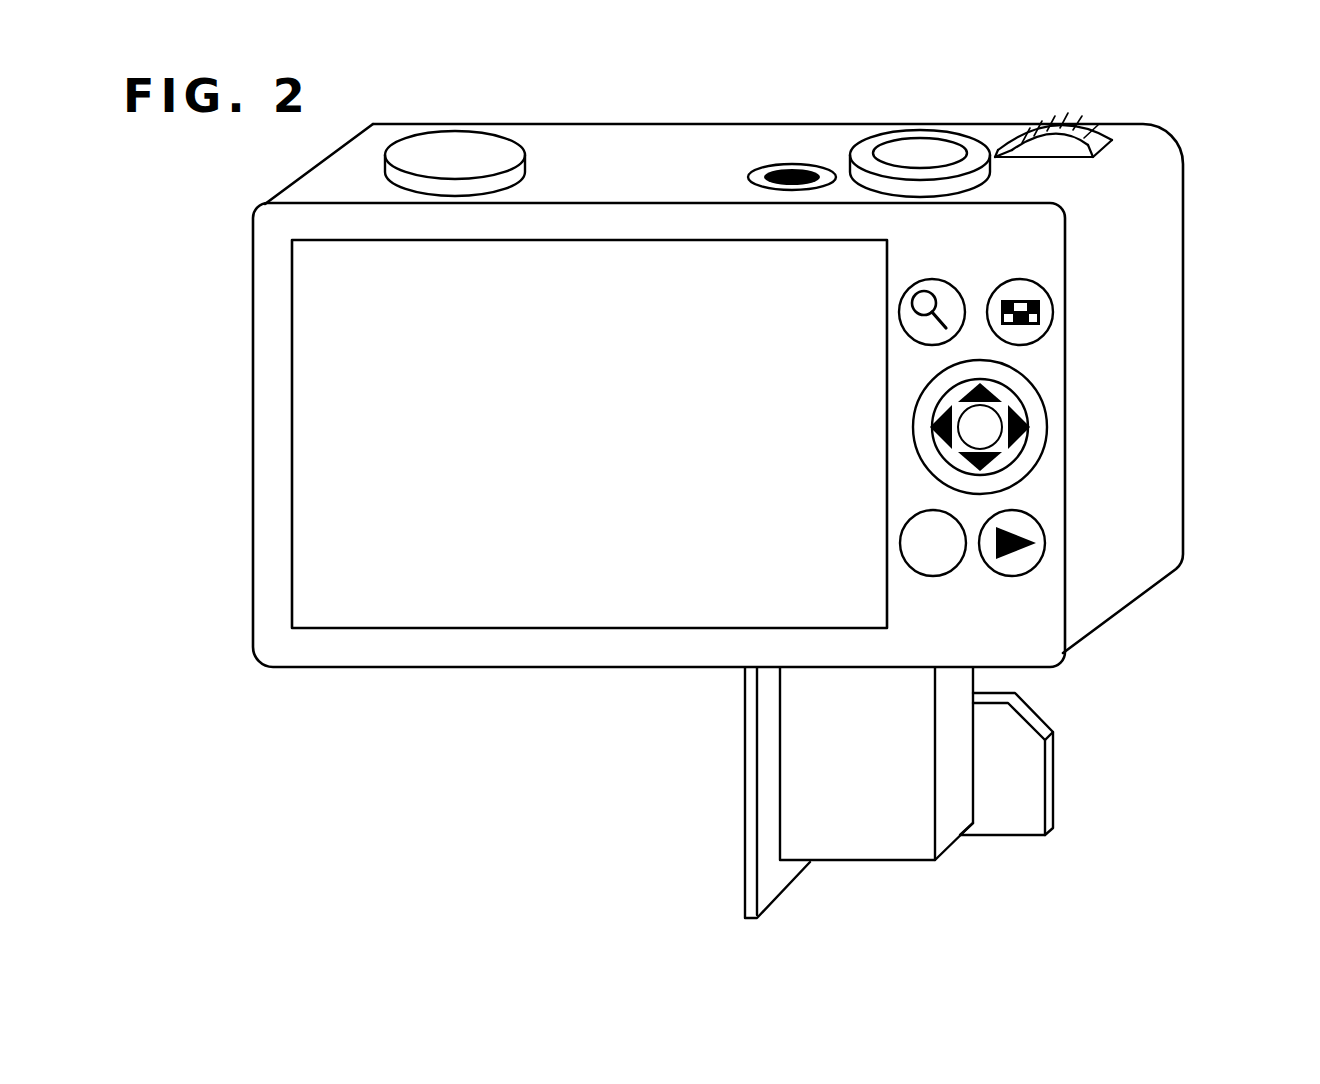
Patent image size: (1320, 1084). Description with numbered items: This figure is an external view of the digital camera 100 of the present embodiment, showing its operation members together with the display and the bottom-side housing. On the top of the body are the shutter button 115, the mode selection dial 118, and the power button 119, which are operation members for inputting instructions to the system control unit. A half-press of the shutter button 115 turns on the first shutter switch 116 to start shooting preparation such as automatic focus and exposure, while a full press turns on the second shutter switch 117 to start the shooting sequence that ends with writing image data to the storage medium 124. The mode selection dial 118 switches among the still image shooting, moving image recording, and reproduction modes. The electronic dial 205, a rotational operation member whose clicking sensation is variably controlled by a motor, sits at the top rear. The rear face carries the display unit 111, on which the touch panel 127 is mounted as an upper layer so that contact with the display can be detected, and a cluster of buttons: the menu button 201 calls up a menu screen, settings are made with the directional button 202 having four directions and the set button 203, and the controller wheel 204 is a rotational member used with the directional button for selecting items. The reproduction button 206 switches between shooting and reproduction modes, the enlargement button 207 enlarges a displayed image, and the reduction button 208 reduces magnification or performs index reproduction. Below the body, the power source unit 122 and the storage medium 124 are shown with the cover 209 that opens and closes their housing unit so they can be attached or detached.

The digital camera 100 is at (371, 669).
The display unit 111 is at (507, 630).
The touch panel 127 is at (589, 434).
The shutter button 115 is at (918, 147).
The first shutter switch 116 is at (920, 155).
The second shutter switch 117 is at (920, 155).
The mode selection dial 118 is at (466, 158).
The power button 119 is at (785, 163).
The power source unit 122 is at (890, 862).
The storage medium 124 is at (1013, 838).
The menu button 201 is at (950, 572).
The directional button 202 is at (1096, 434).
The set button 203 is at (998, 447).
The controller wheel 204 is at (1008, 472).
The electronic dial 205 is at (1110, 144).
The reproduction button 206 is at (1040, 560).
The enlargement button 207 is at (950, 292).
The reduction button 208 is at (1050, 312).
The cover 209 is at (775, 870).